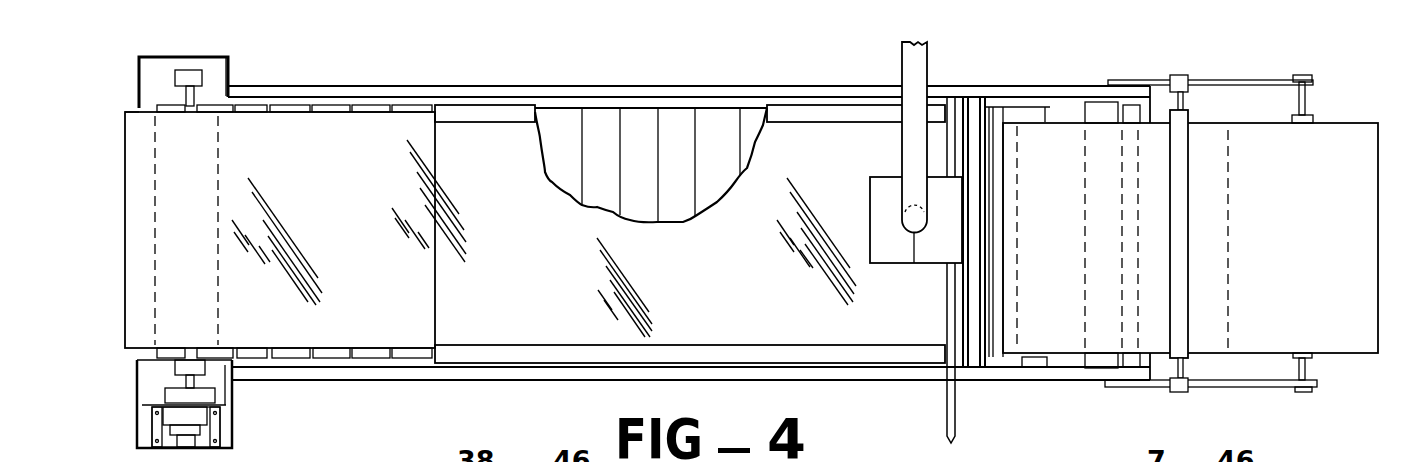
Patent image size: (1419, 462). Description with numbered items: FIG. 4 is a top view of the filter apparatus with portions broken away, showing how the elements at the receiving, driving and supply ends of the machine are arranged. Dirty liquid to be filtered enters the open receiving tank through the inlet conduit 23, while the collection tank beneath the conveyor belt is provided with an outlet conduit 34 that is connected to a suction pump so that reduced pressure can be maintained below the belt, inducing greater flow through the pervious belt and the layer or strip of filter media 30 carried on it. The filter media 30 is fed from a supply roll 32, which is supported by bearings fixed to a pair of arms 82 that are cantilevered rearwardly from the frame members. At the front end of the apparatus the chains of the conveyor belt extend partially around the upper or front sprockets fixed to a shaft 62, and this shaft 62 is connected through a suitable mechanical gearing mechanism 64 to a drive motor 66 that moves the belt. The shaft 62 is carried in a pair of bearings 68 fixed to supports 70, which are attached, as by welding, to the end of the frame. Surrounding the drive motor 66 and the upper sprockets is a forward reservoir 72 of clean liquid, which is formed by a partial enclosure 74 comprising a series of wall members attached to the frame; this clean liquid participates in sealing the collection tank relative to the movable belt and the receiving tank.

The inlet conduit 23 is at (928, 62).
The filter media 30 is at (1212, 145).
The supply roll 32 is at (1342, 150).
The outlet conduit 34 is at (965, 440).
The shaft 62 is at (180, 390).
The mechanical gearing mechanism 64 is at (150, 408).
The drive motor 66 is at (200, 425).
The bearings 68 is at (193, 78).
The supports 70 is at (229, 58).
The forward reservoir 72 is at (152, 78).
The partial enclosure 74 is at (135, 105).
The arms 82 is at (1245, 388).